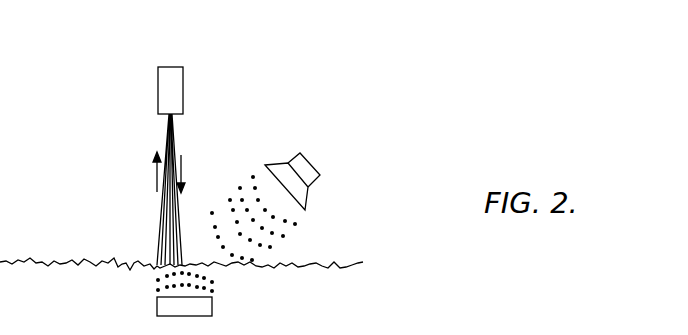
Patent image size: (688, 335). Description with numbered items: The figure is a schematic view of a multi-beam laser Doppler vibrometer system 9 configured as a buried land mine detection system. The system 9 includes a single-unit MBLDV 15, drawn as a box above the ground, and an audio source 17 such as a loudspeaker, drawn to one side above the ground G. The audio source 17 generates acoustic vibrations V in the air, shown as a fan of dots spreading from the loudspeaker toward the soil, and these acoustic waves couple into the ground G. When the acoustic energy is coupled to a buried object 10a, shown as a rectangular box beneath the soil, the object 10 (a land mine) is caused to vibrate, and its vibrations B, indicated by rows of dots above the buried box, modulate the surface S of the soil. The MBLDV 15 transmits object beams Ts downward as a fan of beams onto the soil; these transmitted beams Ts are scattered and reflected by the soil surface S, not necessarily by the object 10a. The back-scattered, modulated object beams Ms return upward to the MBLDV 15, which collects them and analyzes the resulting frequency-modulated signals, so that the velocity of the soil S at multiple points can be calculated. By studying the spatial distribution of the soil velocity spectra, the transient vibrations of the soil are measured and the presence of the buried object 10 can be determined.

The MBLDV system 9 is at (268, 101).
The MBLDV 15 is at (183, 83).
The audio source 17 is at (320, 175).
The object 10 is at (257, 268).
The buried object 10a is at (212, 306).
The surface of the soil S is at (133, 262).
The ground G is at (310, 264).
The vibrations B is at (153, 287).
The acoustic vibrations V is at (241, 176).
The modulated object beams Ms is at (145, 172).
The transmitted object beams Ts is at (188, 174).